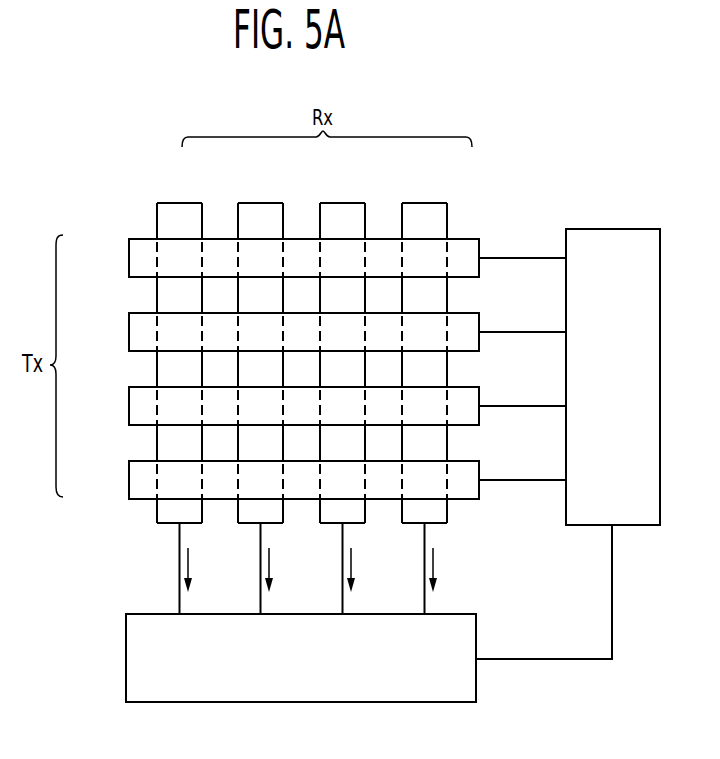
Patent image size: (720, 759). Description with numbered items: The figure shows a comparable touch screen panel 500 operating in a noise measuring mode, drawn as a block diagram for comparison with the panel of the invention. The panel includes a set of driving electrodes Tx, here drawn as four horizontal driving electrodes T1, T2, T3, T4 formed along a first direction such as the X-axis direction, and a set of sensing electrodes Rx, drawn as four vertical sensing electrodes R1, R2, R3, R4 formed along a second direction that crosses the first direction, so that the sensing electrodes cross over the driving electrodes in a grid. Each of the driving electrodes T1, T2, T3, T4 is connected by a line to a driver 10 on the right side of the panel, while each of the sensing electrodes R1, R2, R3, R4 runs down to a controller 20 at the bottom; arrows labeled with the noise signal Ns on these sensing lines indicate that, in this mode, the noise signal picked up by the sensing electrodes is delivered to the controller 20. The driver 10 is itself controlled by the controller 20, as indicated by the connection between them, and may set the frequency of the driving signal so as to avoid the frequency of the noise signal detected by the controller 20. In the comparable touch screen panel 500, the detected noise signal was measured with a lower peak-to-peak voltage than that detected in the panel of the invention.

The comparable touch screen panel 500 is at (539, 139).
The driver 10 is at (607, 229).
The controller 20 is at (140, 614).
The sensing electrode R1 is at (182, 203).
The sensing electrode R2 is at (263, 203).
The sensing electrode R3 is at (344, 203).
The sensing electrode R4 is at (424, 203).
The driving electrode T1 is at (129, 258).
The driving electrode T2 is at (129, 332).
The driving electrode T3 is at (129, 406).
The driving electrode T4 is at (129, 480).